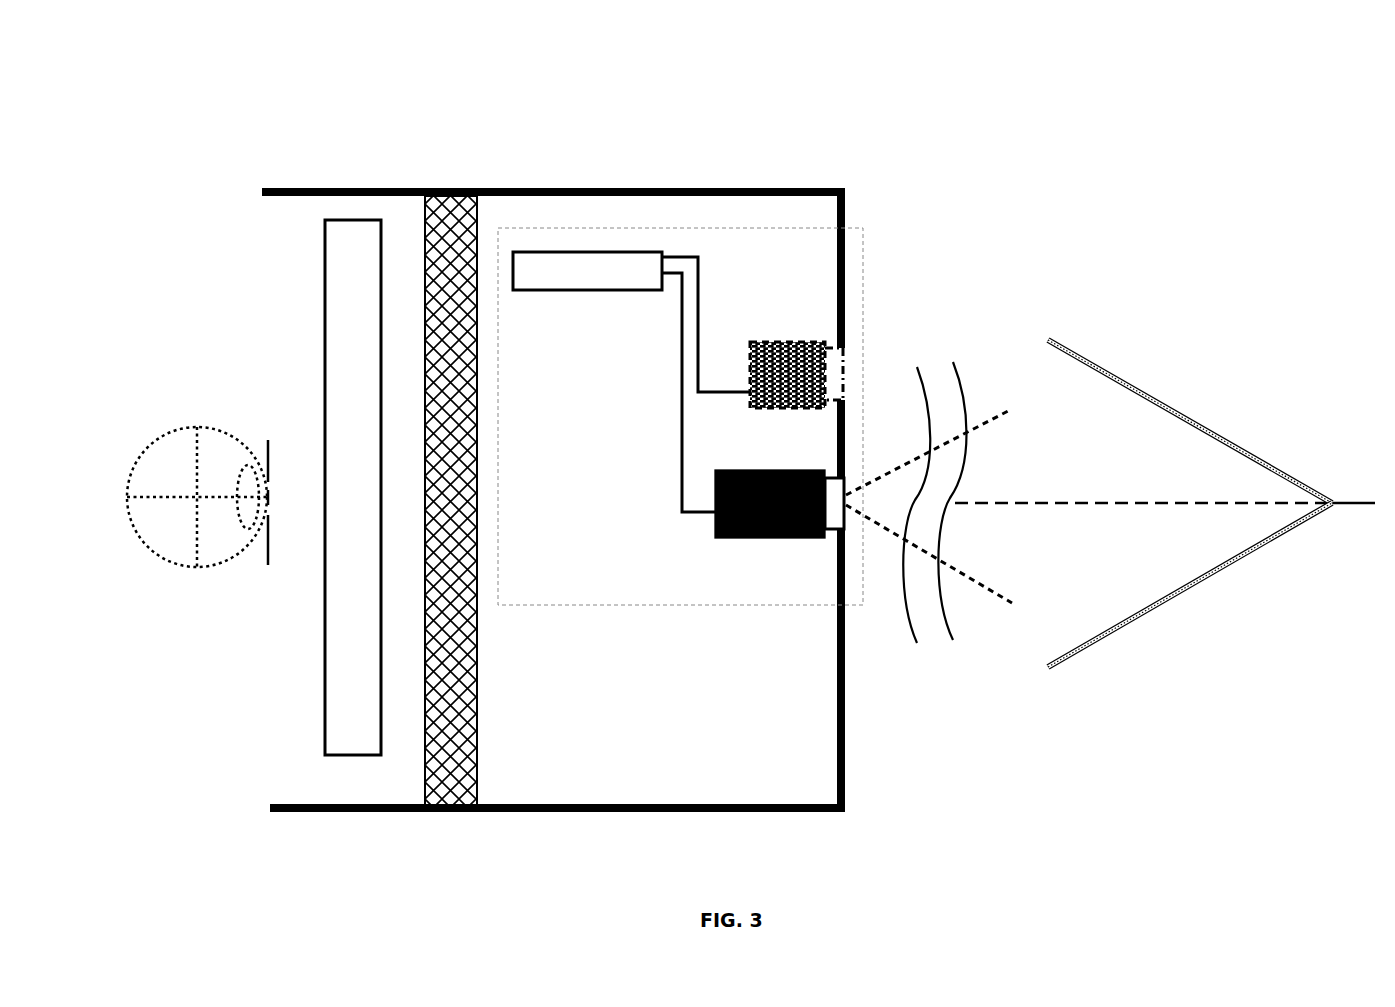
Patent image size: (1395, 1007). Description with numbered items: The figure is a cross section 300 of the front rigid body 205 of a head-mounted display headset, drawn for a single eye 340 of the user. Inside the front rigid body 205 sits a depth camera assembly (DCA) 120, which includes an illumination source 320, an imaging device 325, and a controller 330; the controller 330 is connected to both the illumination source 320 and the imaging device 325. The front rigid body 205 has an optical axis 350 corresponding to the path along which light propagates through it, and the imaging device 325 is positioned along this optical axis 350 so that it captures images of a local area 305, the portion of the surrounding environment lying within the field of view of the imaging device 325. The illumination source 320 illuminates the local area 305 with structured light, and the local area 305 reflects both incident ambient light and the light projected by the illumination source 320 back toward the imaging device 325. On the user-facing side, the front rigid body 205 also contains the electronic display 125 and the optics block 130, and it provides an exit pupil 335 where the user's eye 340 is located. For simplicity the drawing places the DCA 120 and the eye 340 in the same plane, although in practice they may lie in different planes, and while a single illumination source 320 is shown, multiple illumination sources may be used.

The cross section 300 is at (170, 83).
The front rigid body 205 is at (805, 812).
The optics block 130 is at (368, 758).
The electronic display 125 is at (427, 247).
The depth camera assembly (DCA) 120 is at (560, 607).
The controller 330 is at (593, 252).
The illumination source 320 is at (788, 342).
The imaging device 325 is at (715, 529).
The optical axis 350 is at (1355, 503).
The local area 305 is at (1170, 602).
The eye 340 is at (162, 557).
The exit pupil 335 is at (267, 440).